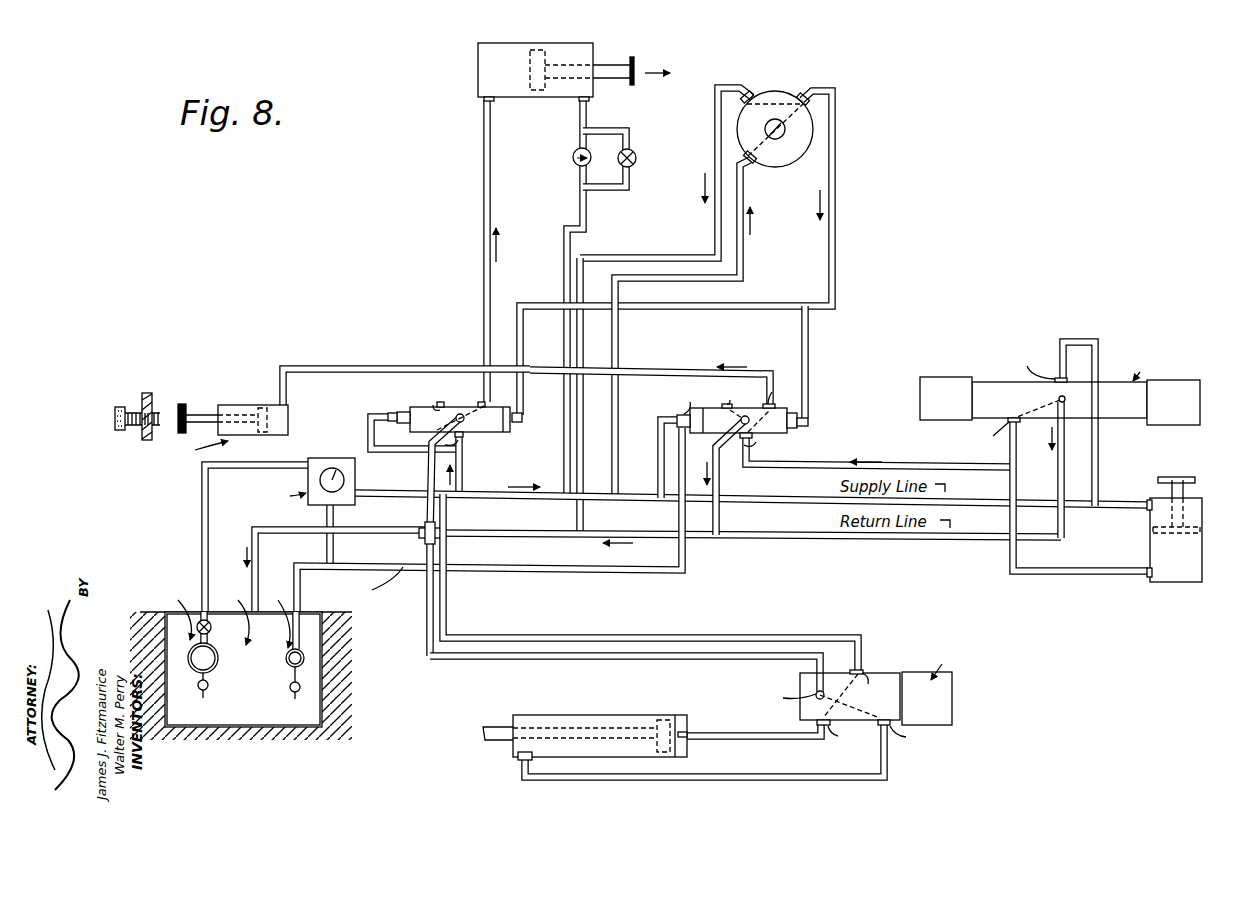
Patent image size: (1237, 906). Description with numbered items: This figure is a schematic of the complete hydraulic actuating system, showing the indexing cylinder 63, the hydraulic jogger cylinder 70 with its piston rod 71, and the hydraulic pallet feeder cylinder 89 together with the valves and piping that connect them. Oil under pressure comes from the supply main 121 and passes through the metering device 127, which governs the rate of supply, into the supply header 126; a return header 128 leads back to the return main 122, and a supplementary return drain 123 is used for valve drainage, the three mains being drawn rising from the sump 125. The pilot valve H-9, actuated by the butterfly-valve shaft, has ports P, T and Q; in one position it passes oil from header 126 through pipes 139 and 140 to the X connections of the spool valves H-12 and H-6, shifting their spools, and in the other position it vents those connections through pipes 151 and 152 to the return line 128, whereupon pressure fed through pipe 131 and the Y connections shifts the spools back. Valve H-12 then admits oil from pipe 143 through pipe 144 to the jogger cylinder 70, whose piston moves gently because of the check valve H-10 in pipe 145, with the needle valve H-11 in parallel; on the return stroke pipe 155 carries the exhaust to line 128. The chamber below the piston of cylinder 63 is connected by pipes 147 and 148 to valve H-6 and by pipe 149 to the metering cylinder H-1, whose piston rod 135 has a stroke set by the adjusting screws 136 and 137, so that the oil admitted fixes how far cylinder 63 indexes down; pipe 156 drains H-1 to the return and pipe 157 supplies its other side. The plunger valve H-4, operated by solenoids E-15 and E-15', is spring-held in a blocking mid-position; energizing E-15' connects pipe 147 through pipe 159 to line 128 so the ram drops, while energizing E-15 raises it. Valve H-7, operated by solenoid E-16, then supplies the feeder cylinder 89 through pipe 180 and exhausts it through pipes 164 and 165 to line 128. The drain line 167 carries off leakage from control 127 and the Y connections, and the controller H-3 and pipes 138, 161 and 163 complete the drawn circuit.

The indexing cylinder 63 is at (1162, 542).
The hydraulic jogger cylinder 70 is at (516, 96).
The jogger piston rod 71 is at (631, 67).
The hydraulic pallet feeder cylinder 89 is at (532, 686).
The supply main 121 is at (214, 672).
The return main 122 is at (264, 668).
The supplementary return drain 123 is at (305, 662).
The reservoir tank 125 is at (187, 604).
The supply header 126 is at (200, 516).
The metering device 127 is at (343, 504).
The return header 128 is at (639, 518).
The pipe 131 is at (373, 455).
The piston rod 135 is at (197, 412).
The adjusting screw 136 is at (143, 407).
The screw 137 is at (115, 413).
The pressure pipe 138 is at (618, 388).
The pipe 139 is at (780, 288).
The pipe 140 is at (809, 338).
The pipe 143 is at (463, 481).
The pipe 144 is at (482, 226).
The pipe 145 is at (577, 208).
The pipe 147 is at (1093, 556).
The pipe 148 is at (940, 452).
The pipe 149 is at (694, 356).
The pipe 151 is at (664, 232).
The pipe 152 is at (578, 476).
The pipe 155 is at (441, 532).
The pipe 156 is at (722, 489).
The pipe 157 is at (352, 397).
The pipe 159 is at (1057, 466).
The weight feeder pipe 161 is at (759, 720).
The pressure pipe 163 is at (1099, 460).
The pipe 164 is at (780, 756).
The pipe 165 is at (550, 657).
The drain line 167 is at (678, 590).
The pressure pipe 180 is at (556, 637).
The metering cylinder H-1 is at (243, 405).
The controller H-3 is at (343, 448).
The double ended plunger type valve H-4 is at (987, 382).
The pilot operated spool valve H-6 is at (788, 412).
The two-position hydraulic valve H-7 is at (883, 672).
The hydraulic pilot valve H-9 is at (790, 93).
The check valve H-10 is at (573, 157).
The needle valve H-11 is at (637, 156).
The two-position pilot operated spool valve H-12 is at (500, 402).
The solenoid E-15 is at (947, 384).
The solenoid E-15' is at (1167, 375).
The solenoid E-16 is at (941, 696).